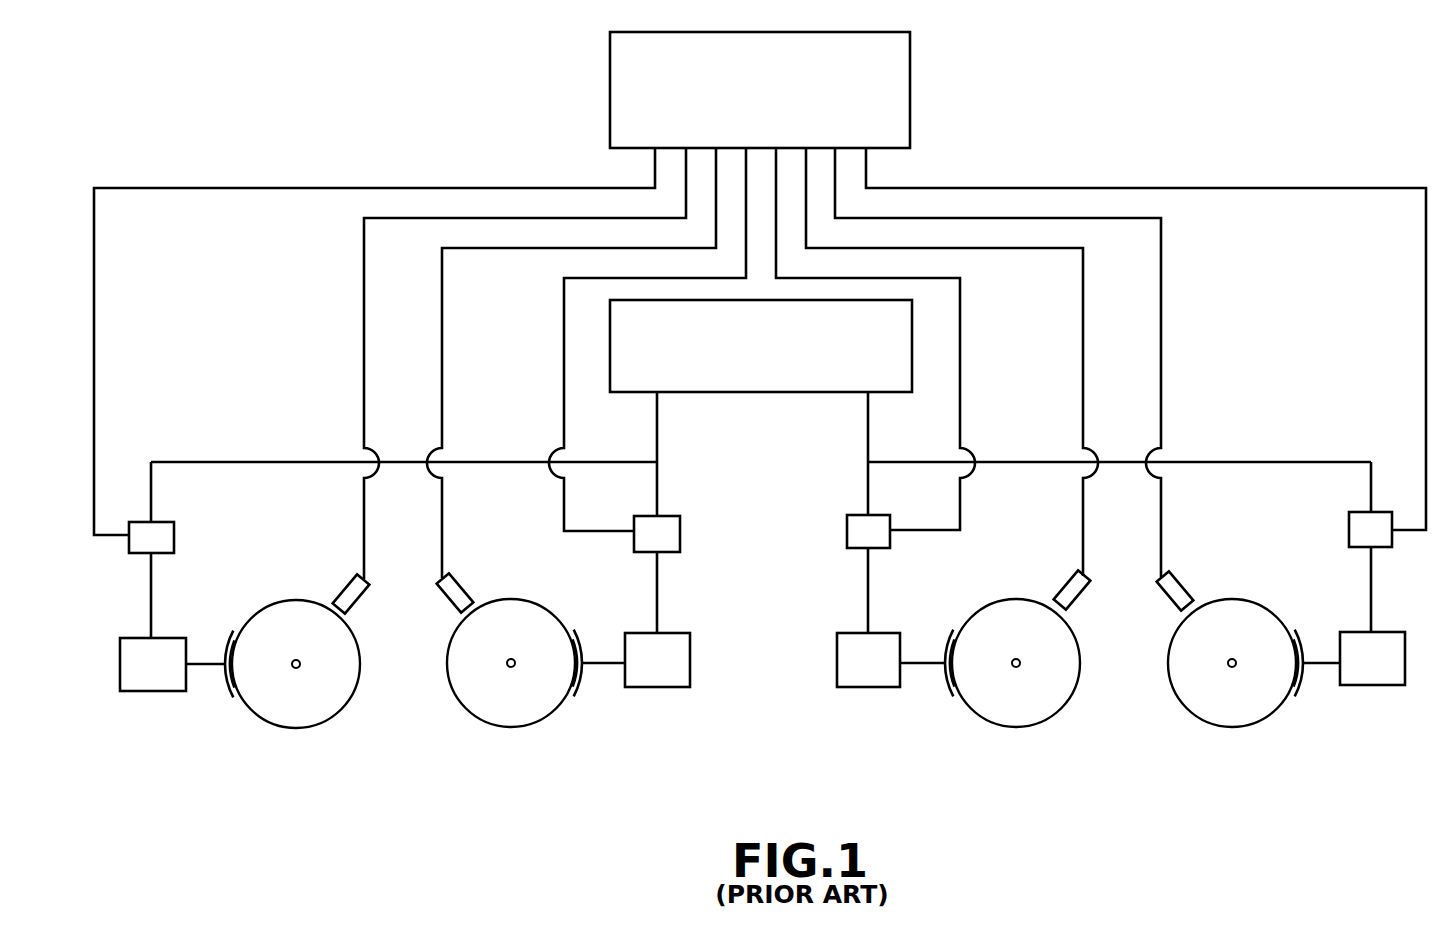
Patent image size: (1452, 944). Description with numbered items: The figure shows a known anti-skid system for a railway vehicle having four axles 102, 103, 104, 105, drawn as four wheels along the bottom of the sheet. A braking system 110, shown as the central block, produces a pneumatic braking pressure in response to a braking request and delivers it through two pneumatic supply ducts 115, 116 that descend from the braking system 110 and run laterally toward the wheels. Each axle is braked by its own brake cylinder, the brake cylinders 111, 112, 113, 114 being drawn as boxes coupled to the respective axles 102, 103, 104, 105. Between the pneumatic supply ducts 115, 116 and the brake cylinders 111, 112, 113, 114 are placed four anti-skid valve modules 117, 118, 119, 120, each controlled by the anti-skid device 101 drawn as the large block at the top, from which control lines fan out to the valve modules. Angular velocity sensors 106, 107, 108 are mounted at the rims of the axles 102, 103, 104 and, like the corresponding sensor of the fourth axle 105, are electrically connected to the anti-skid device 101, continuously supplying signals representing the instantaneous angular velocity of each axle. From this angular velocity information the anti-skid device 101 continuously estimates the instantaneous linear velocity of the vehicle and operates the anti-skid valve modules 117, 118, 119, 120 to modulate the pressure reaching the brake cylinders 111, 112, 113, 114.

The anti-skid device 101 is at (898, 83).
The braking system 110 is at (753, 378).
The axle 102 is at (297, 685).
The axle 103 is at (513, 677).
The axle 104 is at (1005, 683).
The axle 105 is at (1227, 690).
The angular velocity sensor 106 is at (343, 585).
The angular velocity sensor 107 is at (470, 580).
The angular velocity sensor 108 is at (1068, 577).
The brake cylinder 111 is at (147, 683).
The brake cylinder 112 is at (670, 678).
The brake cylinder 113 is at (848, 675).
The brake cylinder 114 is at (1372, 690).
The pneumatic supply duct 115 is at (658, 440).
The pneumatic supply duct 116 is at (867, 437).
The anti-skid valve module 117 is at (177, 543).
The anti-skid valve module 118 is at (677, 540).
The anti-skid valve module 119 is at (848, 535).
The anti-skid valve module 120 is at (1347, 525).